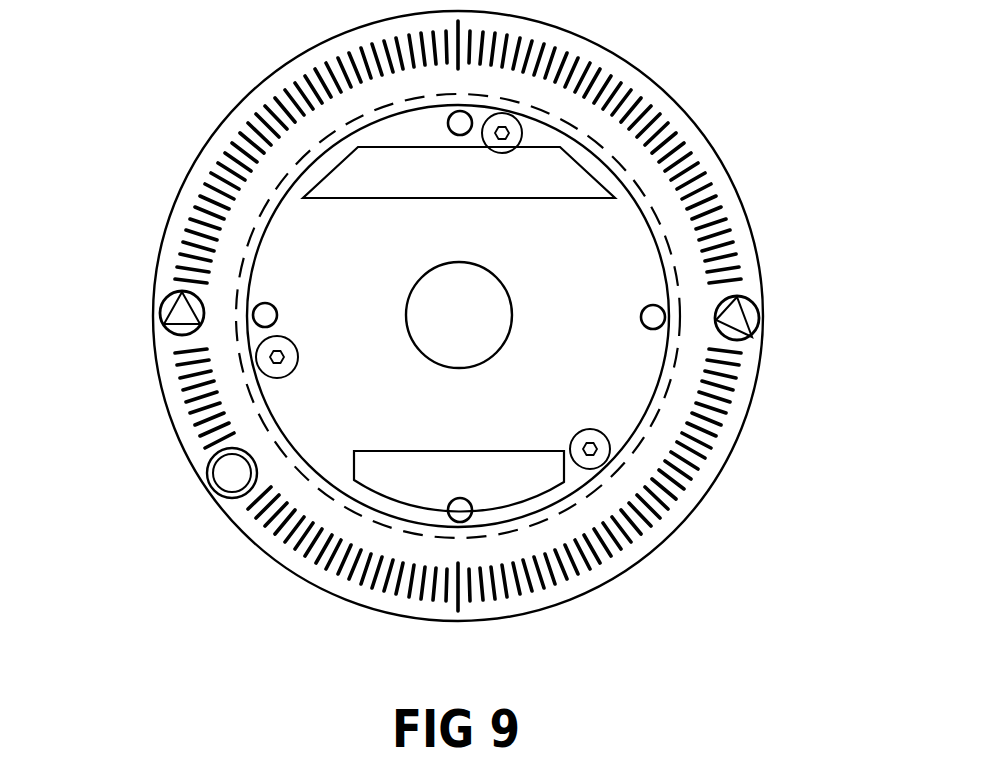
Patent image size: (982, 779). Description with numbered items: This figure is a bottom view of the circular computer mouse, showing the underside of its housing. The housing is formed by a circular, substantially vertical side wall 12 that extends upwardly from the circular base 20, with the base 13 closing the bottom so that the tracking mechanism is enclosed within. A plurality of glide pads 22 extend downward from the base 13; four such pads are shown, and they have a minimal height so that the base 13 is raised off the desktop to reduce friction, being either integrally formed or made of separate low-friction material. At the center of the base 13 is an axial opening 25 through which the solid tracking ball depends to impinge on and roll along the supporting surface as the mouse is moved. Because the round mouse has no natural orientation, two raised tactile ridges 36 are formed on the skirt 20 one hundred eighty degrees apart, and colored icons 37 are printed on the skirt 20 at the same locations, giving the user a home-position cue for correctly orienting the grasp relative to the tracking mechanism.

The vertical side wall 12 is at (680, 276).
The base 13 is at (542, 245).
The skirt 20 is at (233, 130).
The glide pads 22 is at (460, 112).
The axial opening 25 is at (440, 368).
The raised tactile ridges 36 is at (185, 313).
The colored icons 37 is at (178, 336).